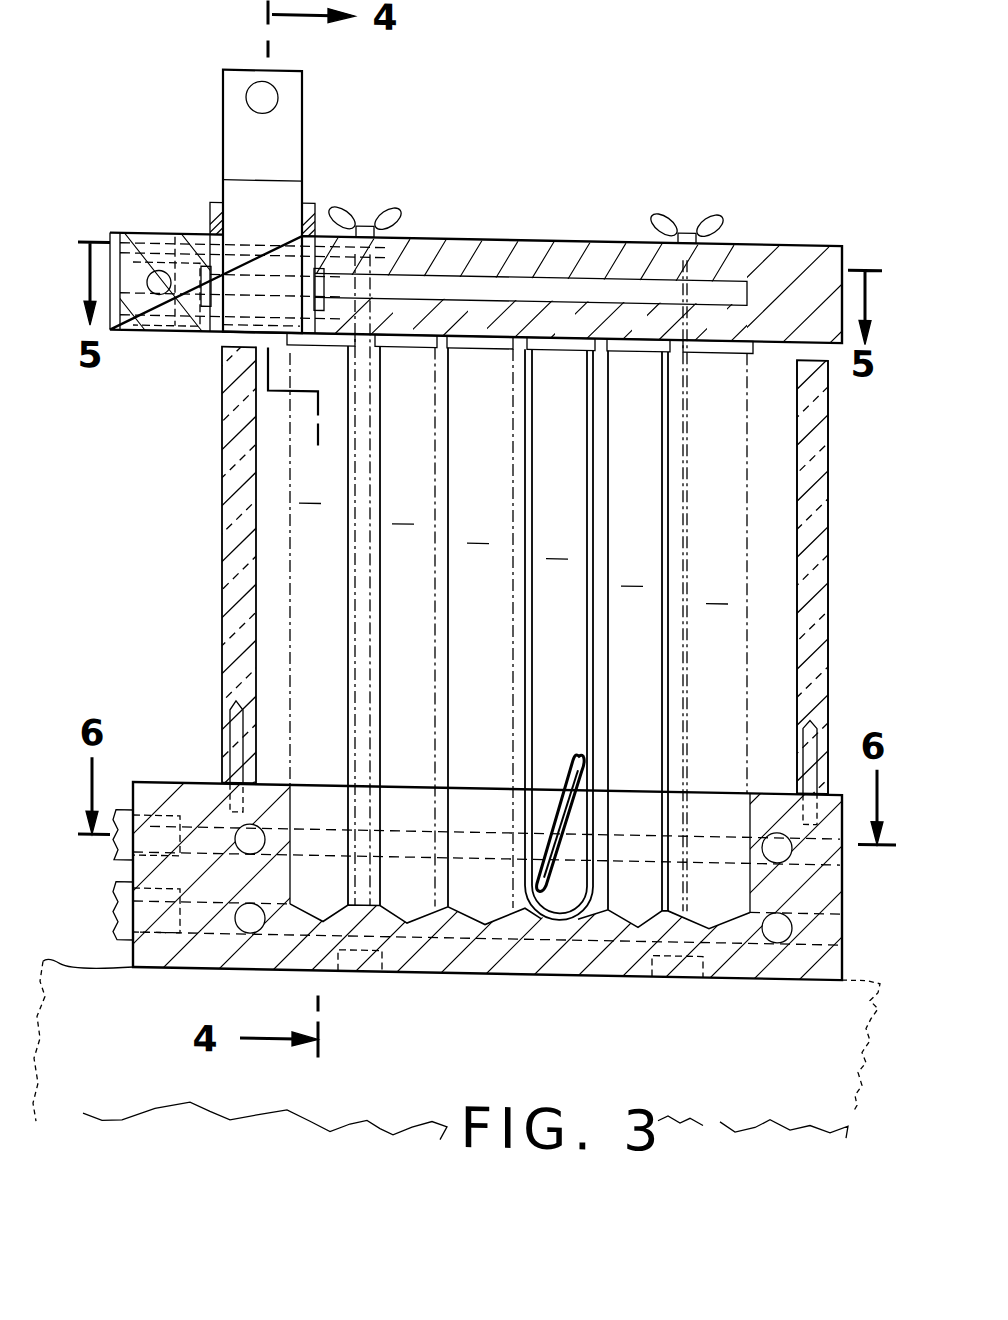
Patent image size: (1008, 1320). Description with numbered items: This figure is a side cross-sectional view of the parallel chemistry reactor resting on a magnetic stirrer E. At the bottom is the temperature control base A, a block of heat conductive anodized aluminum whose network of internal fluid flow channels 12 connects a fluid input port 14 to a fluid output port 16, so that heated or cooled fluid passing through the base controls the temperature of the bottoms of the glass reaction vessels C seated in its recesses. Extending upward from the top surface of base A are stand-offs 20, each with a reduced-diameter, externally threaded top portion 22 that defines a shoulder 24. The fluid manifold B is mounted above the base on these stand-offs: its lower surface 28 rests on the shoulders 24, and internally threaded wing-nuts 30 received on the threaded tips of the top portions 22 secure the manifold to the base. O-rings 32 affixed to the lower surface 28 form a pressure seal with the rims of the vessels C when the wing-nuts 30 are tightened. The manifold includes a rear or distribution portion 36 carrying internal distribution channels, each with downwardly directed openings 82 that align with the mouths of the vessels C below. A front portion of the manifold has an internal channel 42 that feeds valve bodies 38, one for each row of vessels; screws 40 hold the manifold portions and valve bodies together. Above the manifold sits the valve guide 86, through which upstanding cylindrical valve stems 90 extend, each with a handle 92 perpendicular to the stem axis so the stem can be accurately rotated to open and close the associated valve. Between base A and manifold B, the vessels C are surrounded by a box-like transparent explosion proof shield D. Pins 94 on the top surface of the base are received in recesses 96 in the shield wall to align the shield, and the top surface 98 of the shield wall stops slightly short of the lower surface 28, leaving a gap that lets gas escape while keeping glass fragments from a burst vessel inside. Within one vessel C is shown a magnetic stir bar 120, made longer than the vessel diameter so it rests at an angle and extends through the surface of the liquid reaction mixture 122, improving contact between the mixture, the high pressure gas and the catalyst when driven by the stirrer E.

The valve stem 90 is at (275, 131).
The handle 92 is at (278, 97).
The fluid manifold B is at (792, 222).
The top portion of stand-off 22 is at (370, 272).
The rear or distribution portion of manifold 36 is at (130, 233).
The screw 40 is at (175, 236).
The internal channel 42 is at (158, 287).
The valve body 38 is at (240, 328).
The valve guide 86 is at (318, 226).
The wing-nut 30 is at (398, 208).
The shoulder 24 is at (408, 340).
The lower surface of manifold 28 is at (146, 333).
The top surface of shield wall 98 is at (225, 378).
The explosion proof shield D is at (826, 554).
The downwardly directed opening 82 is at (487, 318).
The o-ring 32 is at (648, 413).
The glass reaction vessel C is at (513, 545).
The stand-off 20 is at (672, 480).
The magnetic stir bar 120 is at (565, 745).
The liquid reaction mixture 122 is at (532, 977).
The temperature control base A is at (608, 982).
The internal fluid flow channel 12 is at (487, 782).
The pin 94 is at (232, 718).
The recess in shield wall 96 is at (225, 695).
The fluid input port 14 is at (123, 806).
The fluid output port 16 is at (113, 958).
The magnetic stirrer E is at (122, 1130).